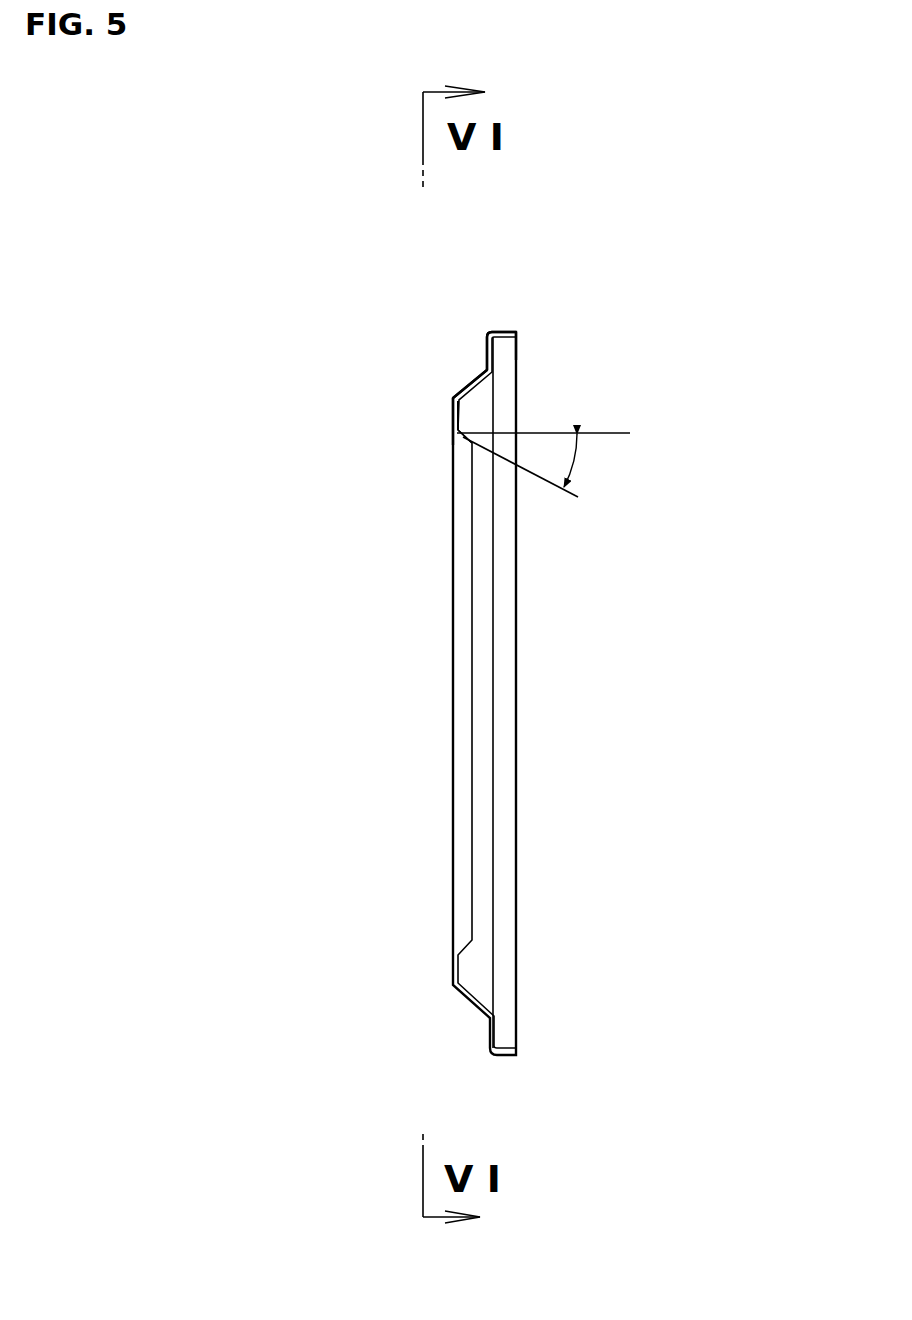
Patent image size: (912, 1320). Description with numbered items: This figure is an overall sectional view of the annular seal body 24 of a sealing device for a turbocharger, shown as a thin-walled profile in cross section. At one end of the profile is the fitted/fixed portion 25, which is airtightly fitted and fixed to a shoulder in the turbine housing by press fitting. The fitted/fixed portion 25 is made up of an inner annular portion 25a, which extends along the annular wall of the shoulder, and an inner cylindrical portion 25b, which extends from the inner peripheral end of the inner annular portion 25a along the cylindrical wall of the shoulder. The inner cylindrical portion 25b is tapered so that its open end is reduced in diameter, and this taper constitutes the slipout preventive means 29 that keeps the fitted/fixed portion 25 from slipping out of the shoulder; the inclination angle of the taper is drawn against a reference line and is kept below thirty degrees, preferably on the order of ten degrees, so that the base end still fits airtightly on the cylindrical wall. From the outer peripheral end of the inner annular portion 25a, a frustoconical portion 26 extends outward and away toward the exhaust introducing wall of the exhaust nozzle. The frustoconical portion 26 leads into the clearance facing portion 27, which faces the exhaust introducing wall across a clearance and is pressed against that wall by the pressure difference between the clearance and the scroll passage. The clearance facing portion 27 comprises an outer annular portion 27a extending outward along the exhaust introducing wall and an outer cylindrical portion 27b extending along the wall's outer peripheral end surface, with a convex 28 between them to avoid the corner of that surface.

The seal body 24 is at (443, 664).
The fitted/fixed portion 25 is at (451, 422).
The inner annular portion 25a is at (451, 410).
The inner cylindrical portion 25b is at (460, 442).
The frustoconical portion 26 is at (473, 371).
The clearance facing portion 27 is at (505, 328).
The outer annular portion 27a is at (487, 352).
The outer cylindrical portion 27b is at (516, 331).
The convex 28 is at (488, 334).
The slipout preventive means 29 is at (478, 452).